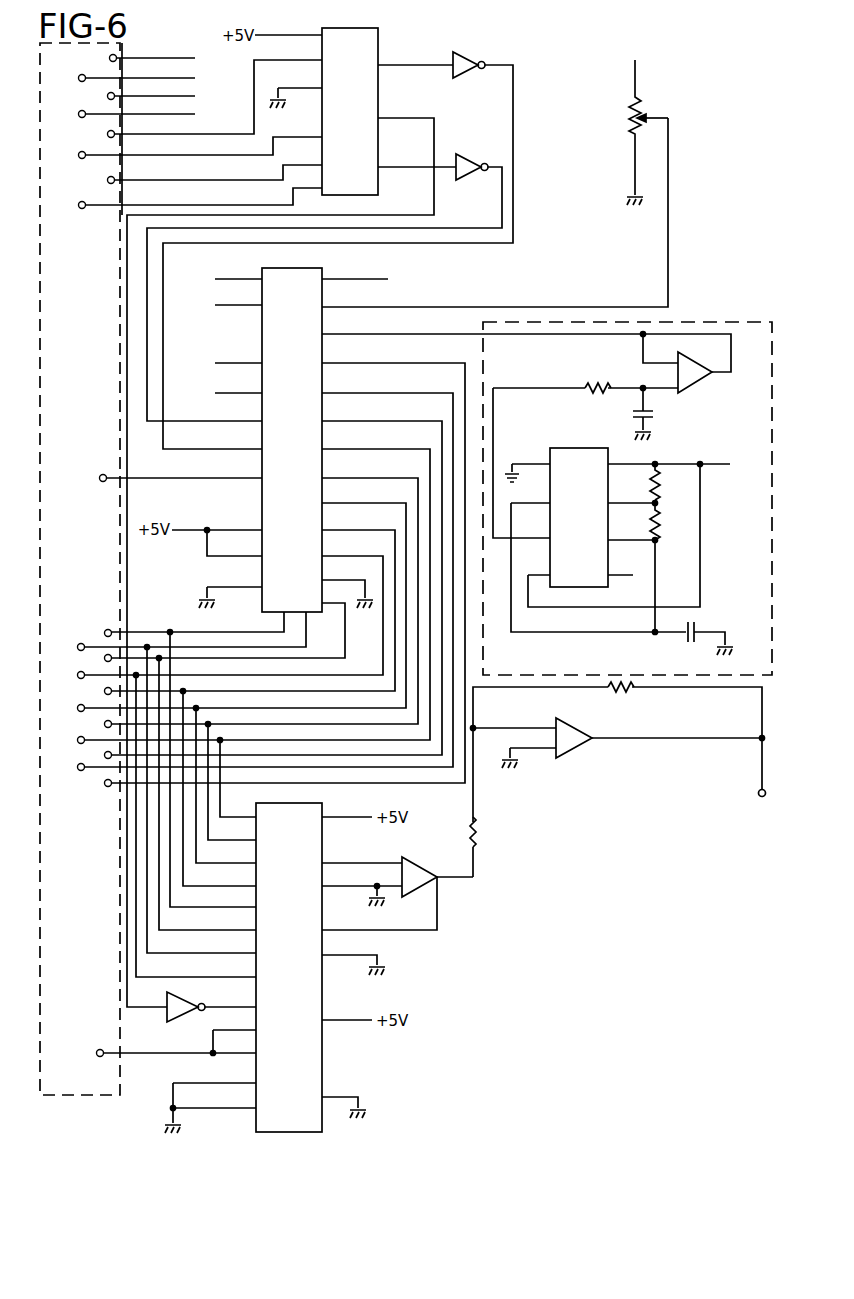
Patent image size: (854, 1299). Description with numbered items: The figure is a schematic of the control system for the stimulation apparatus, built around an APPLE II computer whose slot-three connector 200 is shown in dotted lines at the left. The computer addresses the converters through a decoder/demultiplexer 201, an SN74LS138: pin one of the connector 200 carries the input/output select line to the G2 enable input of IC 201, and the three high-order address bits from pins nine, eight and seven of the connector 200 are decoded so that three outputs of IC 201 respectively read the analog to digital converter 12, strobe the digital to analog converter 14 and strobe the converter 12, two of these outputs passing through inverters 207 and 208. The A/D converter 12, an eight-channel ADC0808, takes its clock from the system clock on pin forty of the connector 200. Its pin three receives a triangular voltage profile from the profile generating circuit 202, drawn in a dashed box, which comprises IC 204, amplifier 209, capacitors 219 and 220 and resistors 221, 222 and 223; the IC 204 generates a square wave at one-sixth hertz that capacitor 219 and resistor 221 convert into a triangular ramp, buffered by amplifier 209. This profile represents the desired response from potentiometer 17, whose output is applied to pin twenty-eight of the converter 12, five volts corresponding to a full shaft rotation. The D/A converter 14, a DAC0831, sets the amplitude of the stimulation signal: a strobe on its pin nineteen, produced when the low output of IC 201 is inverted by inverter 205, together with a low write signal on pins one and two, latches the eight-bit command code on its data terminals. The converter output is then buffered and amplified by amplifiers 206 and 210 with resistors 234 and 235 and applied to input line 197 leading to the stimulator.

The analog to digital converter 12 is at (296, 354).
The digital to analog converter 14 is at (290, 944).
The potentiometer 17 is at (645, 107).
The input line 197 is at (762, 768).
The connector 200 is at (66, 1098).
The decoder/demultiplexer 201 is at (368, 78).
The profile generating circuit 202 is at (686, 321).
The IC 204 is at (592, 496).
The inverter 205 is at (172, 1020).
The amplifier 206 is at (425, 867).
The inverter 207 is at (463, 50).
The inverter 208 is at (476, 130).
The amplifier 209 is at (703, 386).
The amplifier 210 is at (584, 730).
The capacitor 219 is at (632, 414).
The capacitor 220 is at (689, 654).
The resistor 221 is at (596, 384).
The resistor 222 is at (661, 478).
The resistor 223 is at (660, 537).
The resistor 234 is at (479, 830).
The resistor 235 is at (640, 692).